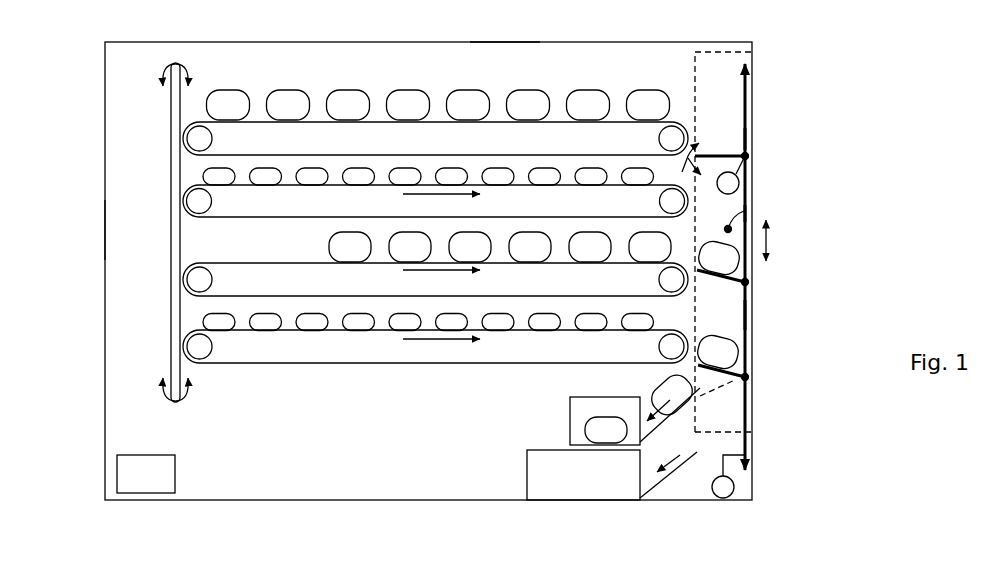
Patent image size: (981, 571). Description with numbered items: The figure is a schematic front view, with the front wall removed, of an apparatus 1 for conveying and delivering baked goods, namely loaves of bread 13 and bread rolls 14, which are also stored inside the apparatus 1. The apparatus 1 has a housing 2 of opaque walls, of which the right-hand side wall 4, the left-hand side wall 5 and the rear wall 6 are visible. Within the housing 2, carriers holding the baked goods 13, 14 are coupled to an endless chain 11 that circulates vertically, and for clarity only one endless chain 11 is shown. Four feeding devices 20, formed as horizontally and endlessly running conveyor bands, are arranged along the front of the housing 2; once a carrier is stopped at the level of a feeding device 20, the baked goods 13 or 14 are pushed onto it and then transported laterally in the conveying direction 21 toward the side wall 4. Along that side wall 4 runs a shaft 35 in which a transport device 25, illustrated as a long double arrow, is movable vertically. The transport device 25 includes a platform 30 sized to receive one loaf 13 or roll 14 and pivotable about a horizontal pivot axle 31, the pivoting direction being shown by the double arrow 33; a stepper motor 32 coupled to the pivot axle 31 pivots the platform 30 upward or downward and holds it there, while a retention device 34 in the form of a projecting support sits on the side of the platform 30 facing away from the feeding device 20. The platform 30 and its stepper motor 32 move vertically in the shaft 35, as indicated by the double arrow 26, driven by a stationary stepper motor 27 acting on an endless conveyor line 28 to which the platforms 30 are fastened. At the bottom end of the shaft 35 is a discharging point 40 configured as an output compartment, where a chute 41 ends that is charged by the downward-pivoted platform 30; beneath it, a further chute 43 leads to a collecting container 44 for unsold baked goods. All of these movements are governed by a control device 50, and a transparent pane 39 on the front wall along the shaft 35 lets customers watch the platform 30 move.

The apparatus 1 is at (812, 443).
The housing 2 is at (101, 103).
The right-hand side wall 4 is at (753, 186).
The left-hand side wall 5 is at (105, 228).
The rear wall 6 is at (500, 43).
The endless chain 11 is at (171, 121).
The loaf of bread 13 is at (413, 96).
The bread roll 14 is at (213, 177).
The feeding device 20 is at (253, 121).
The conveying direction 21 is at (425, 194).
The transport device 25 is at (751, 108).
The double arrow 26 is at (770, 240).
The stepper motor 27 is at (711, 487).
The endless conveyor line 28 is at (748, 315).
The platform 30 is at (708, 154).
The pivot axle 31 is at (747, 157).
The stepper motor 32 is at (723, 218).
The double arrow 33 is at (682, 172).
The retention device 34 is at (739, 142).
The shaft 35 is at (748, 213).
The transparent pane 39 is at (753, 50).
The discharging point 40 is at (570, 405).
The chute 41 is at (641, 442).
The further chute 43 is at (693, 447).
The collecting container 44 is at (530, 492).
The control device 50 is at (146, 474).